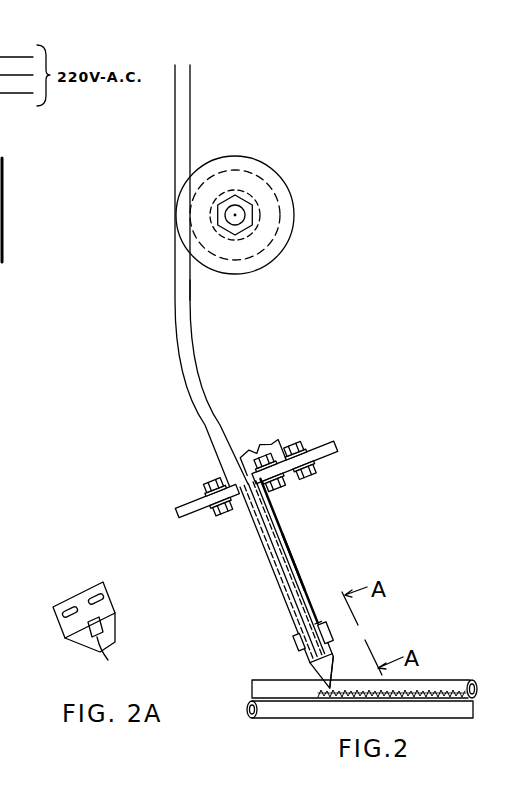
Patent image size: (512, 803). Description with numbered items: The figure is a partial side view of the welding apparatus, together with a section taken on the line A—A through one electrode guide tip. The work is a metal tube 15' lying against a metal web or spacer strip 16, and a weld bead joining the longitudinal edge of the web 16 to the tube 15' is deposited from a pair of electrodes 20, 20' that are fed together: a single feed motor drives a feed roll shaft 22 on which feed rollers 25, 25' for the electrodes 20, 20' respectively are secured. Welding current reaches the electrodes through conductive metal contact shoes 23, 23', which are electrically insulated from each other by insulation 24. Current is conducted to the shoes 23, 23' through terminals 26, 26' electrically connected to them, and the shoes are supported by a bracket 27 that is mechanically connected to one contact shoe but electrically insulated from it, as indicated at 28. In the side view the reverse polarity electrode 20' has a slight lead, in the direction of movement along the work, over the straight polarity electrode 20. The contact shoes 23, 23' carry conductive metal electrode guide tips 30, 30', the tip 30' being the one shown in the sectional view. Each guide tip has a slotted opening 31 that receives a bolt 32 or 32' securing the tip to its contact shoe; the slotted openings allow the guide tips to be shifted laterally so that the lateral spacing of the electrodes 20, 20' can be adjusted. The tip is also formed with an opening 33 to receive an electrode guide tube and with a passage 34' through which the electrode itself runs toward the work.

In FIG. 2, the metal tube 15' is at (372, 668).
In FIG. 2, the metal web or spacer strip 16 is at (292, 701).
In FIG. 2, the electrode 20 is at (235, 376).
In FIG. 2, the electrode 20' is at (281, 480).
In FIG. 2, the feed roll shaft 22 is at (250, 197).
In FIG. 2, the contact shoe 23 is at (272, 592).
In FIG. 2, the contact shoe 23' is at (333, 543).
In FIG. 2, the insulation 24 is at (275, 528).
In FIG. 2, the feed roller 25 is at (275, 223).
In FIG. 2, the feed roller 25' is at (273, 215).
In FIG. 2, the terminal 26 is at (186, 488).
In FIG. 2, the terminal 26' is at (324, 444).
In FIG. 2, the bracket 27 is at (270, 433).
In FIG. 2, the insulation 28 is at (288, 452).
In FIG. 2, the electrode guide tip 30 is at (262, 646).
In FIG. 2, the electrode guide tip 30' is at (346, 651).
In FIG. 2A, the electrode guide tip 30' is at (62, 626).
In FIG. 2A, the slotted opening 31 is at (94, 595).
In FIG. 2, the bolt 32 is at (252, 628).
In FIG. 2, the bolt 32' is at (340, 592).
In FIG. 2A, the opening 33 is at (103, 628).
In FIG. 2A, the passage 34' is at (112, 662).